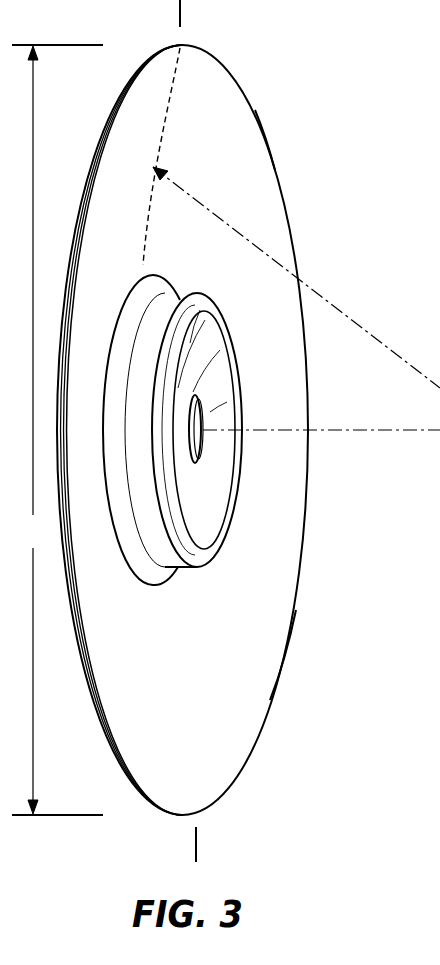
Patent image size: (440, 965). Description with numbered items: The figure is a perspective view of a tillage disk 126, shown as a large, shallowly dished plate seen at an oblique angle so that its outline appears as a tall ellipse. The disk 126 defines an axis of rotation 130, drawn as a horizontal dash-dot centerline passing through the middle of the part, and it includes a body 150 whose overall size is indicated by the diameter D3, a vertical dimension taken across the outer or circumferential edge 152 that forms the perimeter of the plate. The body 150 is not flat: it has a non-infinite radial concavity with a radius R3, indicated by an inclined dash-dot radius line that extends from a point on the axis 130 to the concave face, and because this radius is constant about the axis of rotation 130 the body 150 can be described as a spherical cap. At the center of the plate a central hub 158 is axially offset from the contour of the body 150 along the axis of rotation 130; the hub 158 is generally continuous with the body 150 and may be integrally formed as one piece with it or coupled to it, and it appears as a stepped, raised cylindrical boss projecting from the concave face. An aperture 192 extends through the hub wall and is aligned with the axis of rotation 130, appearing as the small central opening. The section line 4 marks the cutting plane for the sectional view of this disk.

The disk 126 is at (245, 89).
The outer or circumferential edge 152 is at (219, 52).
The body 150 is at (243, 154).
The central hub 158 is at (243, 638).
The axis of rotation 130 is at (352, 430).
The aperture 192 is at (197, 445).
The radius R3 is at (335, 307).
The diameter D3 is at (57, 430).
The section line 4- 4 is at (179, 14).